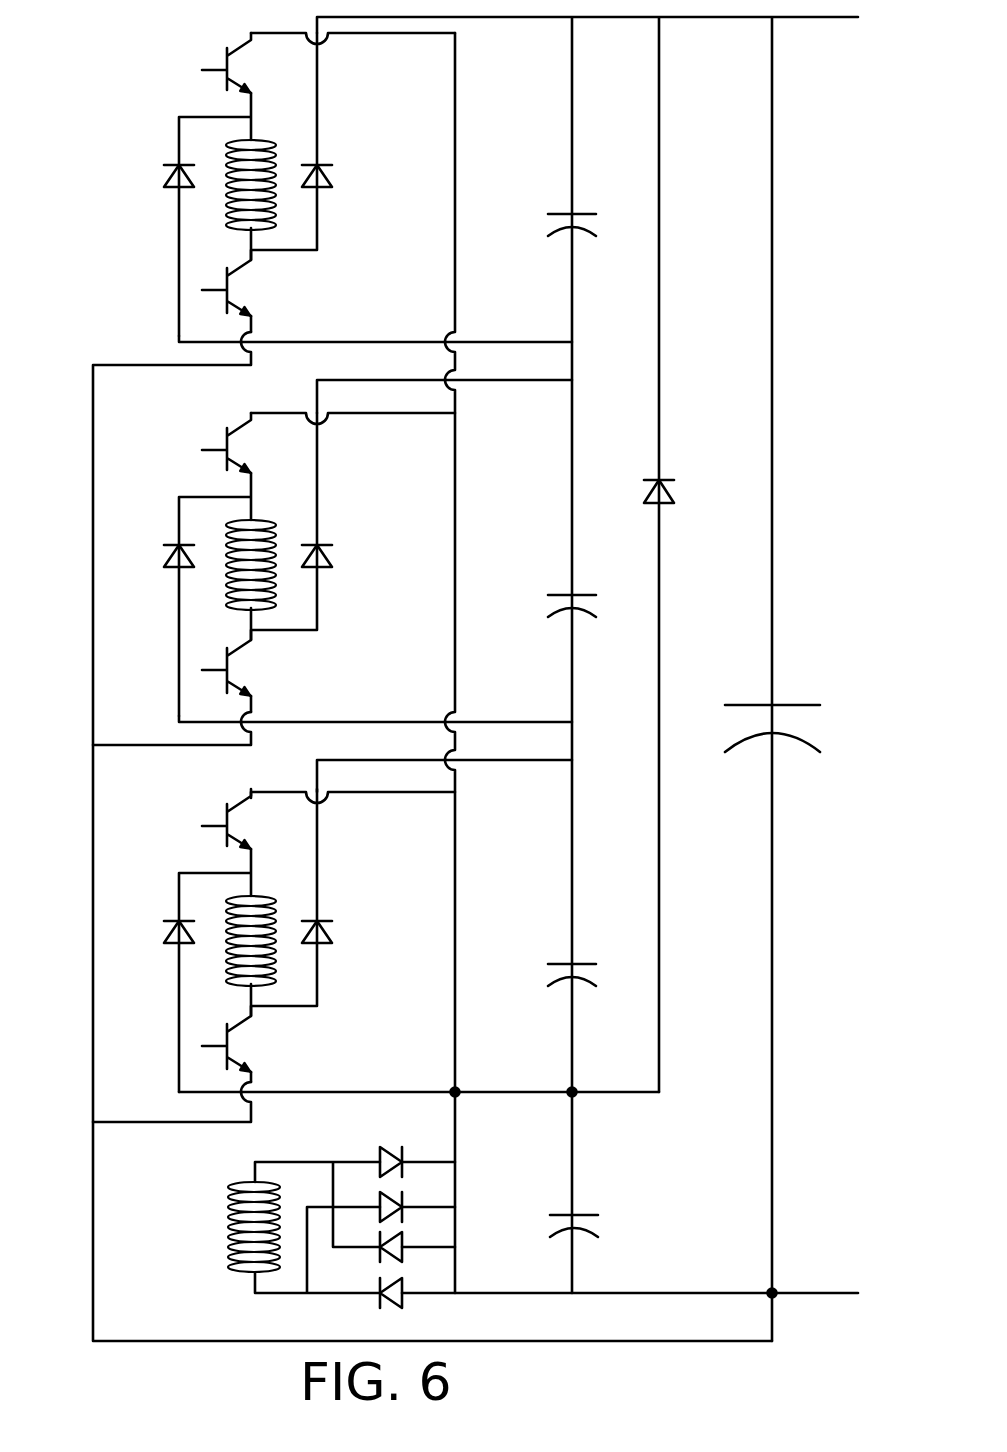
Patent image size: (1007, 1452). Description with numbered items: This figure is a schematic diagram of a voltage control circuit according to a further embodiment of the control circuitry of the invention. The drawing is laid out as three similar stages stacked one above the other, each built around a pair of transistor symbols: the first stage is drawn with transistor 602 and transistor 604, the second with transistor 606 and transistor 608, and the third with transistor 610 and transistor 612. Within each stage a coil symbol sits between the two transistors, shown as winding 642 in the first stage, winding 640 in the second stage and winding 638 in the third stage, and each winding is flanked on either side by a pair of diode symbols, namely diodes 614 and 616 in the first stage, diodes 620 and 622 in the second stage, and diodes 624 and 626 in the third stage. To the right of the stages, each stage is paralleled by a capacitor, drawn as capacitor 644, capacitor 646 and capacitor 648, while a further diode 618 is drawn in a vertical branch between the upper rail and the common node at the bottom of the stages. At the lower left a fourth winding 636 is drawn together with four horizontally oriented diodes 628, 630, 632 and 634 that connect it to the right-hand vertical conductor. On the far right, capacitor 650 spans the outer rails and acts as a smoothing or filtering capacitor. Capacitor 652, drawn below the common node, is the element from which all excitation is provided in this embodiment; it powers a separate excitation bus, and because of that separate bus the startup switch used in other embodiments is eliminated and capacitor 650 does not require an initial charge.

The transistor 602 is at (227, 54).
The transistor 604 is at (247, 278).
The transistor 606 is at (243, 432).
The transistor 608 is at (247, 655).
The transistor 610 is at (227, 812).
The transistor 612 is at (247, 1030).
The diode 614 is at (164, 176).
The diode 616 is at (332, 176).
The diode 618 is at (661, 478).
The diode 620 is at (177, 541).
The diode 622 is at (332, 557).
The diode 624 is at (177, 920).
The diode 626 is at (332, 930).
The diode 628 is at (405, 1298).
The diode 630 is at (380, 1250).
The diode 632 is at (405, 1215).
The diode 634 is at (383, 1153).
The winding 636 is at (228, 1250).
The winding 638 is at (240, 990).
The winding 640 is at (240, 612).
The winding 642 is at (240, 232).
The capacitor 644 is at (560, 214).
The capacitor 646 is at (560, 595).
The capacitor 648 is at (560, 964).
The capacitor 650 is at (755, 705).
The capacitor 652 is at (583, 1215).